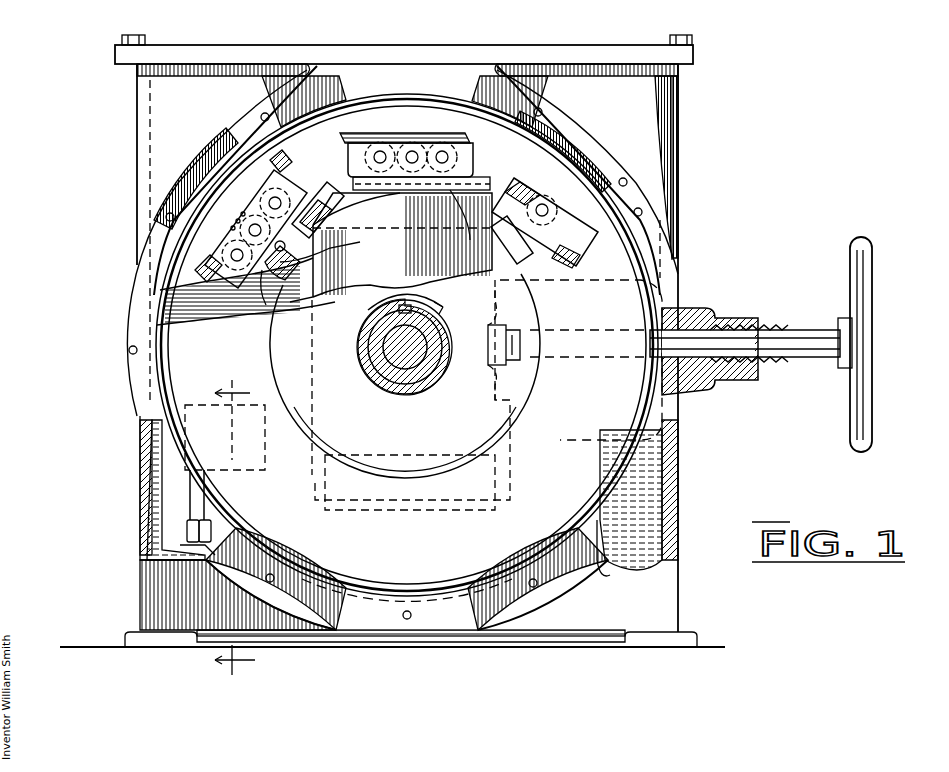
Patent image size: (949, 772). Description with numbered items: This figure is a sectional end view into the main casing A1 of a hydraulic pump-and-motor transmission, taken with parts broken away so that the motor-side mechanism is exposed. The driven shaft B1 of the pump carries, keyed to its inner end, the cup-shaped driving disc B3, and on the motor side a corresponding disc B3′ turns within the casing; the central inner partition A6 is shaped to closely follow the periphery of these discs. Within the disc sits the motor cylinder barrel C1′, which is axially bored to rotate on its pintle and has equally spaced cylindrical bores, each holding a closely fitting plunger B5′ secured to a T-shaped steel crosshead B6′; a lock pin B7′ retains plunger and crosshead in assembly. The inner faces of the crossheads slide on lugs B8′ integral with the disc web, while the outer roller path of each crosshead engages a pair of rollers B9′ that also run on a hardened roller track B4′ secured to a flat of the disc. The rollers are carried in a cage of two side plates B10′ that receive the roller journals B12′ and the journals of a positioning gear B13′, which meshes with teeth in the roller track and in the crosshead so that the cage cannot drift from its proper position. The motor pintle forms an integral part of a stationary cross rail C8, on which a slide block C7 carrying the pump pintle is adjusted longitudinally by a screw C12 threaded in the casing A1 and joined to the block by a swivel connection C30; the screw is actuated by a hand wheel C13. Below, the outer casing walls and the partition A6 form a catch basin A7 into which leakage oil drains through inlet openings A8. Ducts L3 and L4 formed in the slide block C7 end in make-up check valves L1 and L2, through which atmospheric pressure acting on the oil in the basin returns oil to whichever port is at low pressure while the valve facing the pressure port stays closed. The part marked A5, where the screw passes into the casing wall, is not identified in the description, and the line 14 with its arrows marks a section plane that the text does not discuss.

The main casing A1 is at (150, 128).
The boss A5 is at (718, 310).
The central inner partition A6 is at (597, 520).
The catch basin A7 is at (653, 522).
The inlet openings A8 is at (150, 440).
The driven shaft B1 is at (395, 357).
The driving disc B3 is at (405, 392).
The motor driving disc B3′ is at (533, 160).
The roller track B4′ is at (393, 140).
The plunger B5′ is at (297, 252).
The crosshead B6′ is at (265, 300).
The lock pin B7′ is at (283, 255).
The lugs B8′ is at (336, 196).
The rollers B9′ is at (416, 188).
The side plates B10′ is at (480, 195).
The journals B12′ is at (382, 155).
The positioning gear B13′ is at (248, 185).
The motor cylinder barrel C1′ is at (505, 242).
The slide block C7 is at (391, 247).
The cross rail C8 is at (246, 291).
The screw C12 is at (807, 362).
The hand wheel C13 is at (872, 262).
The swivel connection C30 is at (508, 345).
The check valve L1 is at (182, 535).
The check valve L2 is at (210, 533).
The duct L3 is at (213, 500).
The duct L4 is at (203, 508).
The section line 14 is at (235, 524).